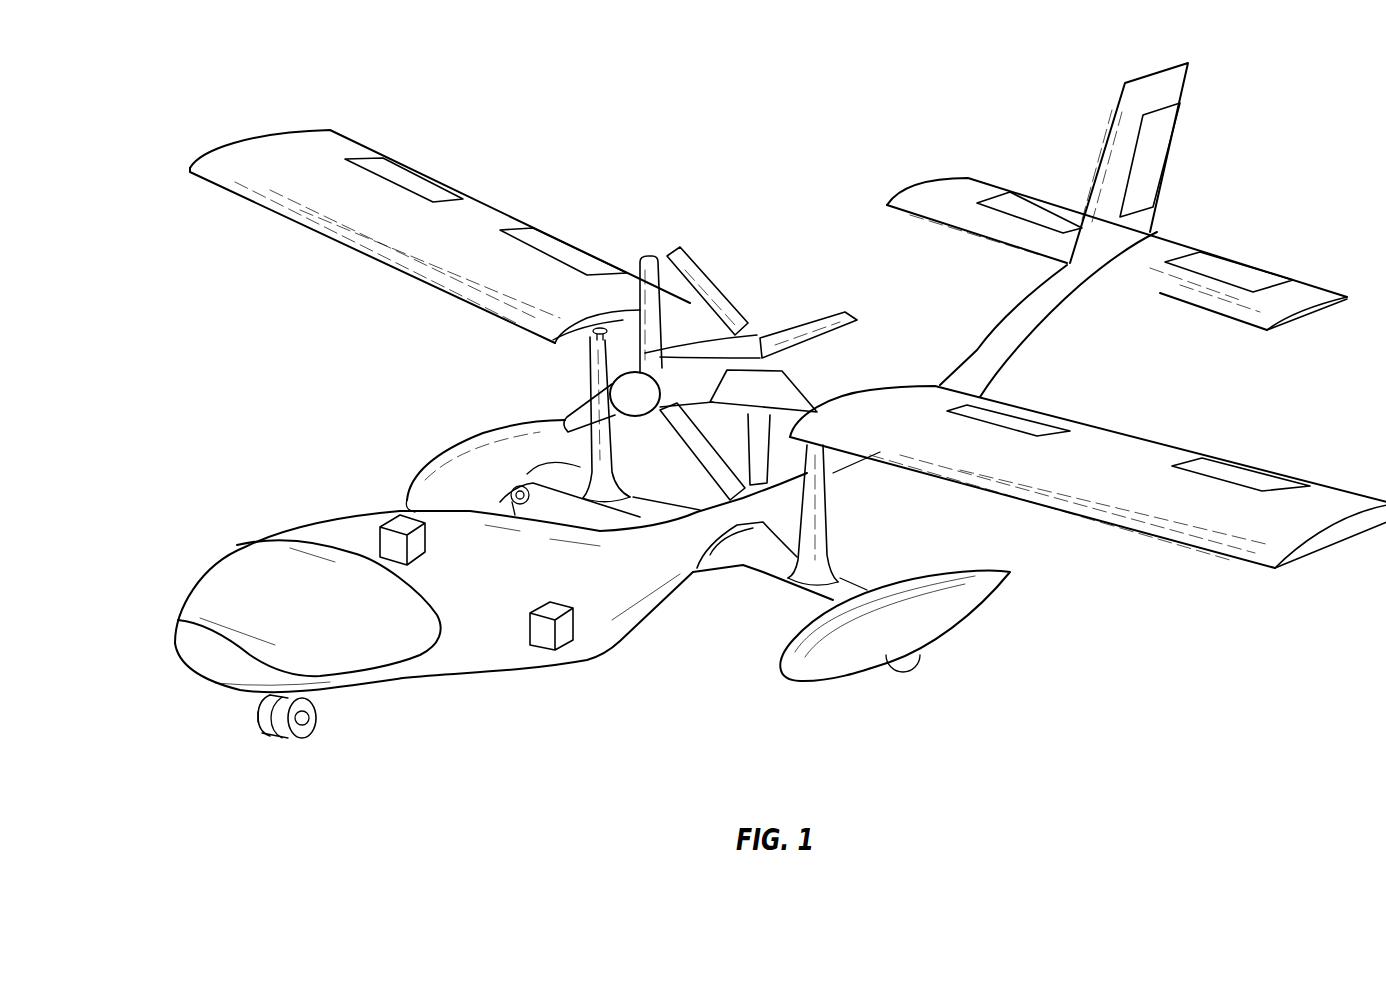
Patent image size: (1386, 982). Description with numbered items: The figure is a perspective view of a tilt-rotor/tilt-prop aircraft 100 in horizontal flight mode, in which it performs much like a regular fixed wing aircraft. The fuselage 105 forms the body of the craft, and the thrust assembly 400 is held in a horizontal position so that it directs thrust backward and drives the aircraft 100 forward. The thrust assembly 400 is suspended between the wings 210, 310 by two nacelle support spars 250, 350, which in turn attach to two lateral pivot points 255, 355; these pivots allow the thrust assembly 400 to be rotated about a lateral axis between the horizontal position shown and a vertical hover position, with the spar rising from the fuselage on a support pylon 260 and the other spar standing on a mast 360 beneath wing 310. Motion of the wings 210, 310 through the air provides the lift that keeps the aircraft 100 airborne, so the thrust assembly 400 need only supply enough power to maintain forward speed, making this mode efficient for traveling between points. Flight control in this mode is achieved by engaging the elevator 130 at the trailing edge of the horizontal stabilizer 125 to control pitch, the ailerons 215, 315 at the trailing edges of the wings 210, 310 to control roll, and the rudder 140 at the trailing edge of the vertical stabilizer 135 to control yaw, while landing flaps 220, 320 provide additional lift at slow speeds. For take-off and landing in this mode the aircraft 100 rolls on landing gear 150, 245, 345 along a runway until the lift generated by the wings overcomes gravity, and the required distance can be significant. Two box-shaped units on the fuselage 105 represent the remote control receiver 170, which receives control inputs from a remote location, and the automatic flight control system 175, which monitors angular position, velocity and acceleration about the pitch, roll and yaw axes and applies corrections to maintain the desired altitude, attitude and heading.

The tilt-rotor/tilt-prop aircraft 100 is at (162, 92).
The fuselage 105 is at (180, 597).
The horizontal stabilizer 125 is at (1242, 314).
The elevator 130 is at (1250, 260).
The vertical stabilizer 135 is at (1150, 78).
The rudder 140 is at (1172, 152).
The landing gear 150 is at (293, 742).
The remote control receiver 170 is at (556, 653).
The automatic flight control system 175 is at (393, 515).
The wing 210 is at (343, 245).
The aileron 215 is at (417, 170).
The landing flap 220 is at (563, 240).
The landing gear 245 is at (520, 508).
The nacelle support spar 250 is at (683, 303).
The lateral pivot point 255 is at (602, 336).
The propeller pylon 260 is at (620, 485).
The wing 310 is at (1183, 537).
The aileron 315 is at (1260, 470).
The landing flap 320 is at (1020, 410).
The landing gear 345 is at (903, 672).
The nacelle support spar 350 is at (787, 375).
The lateral pivot point 355 is at (813, 410).
The wing mast 360 is at (822, 555).
The thrust assembly 400 is at (740, 340).